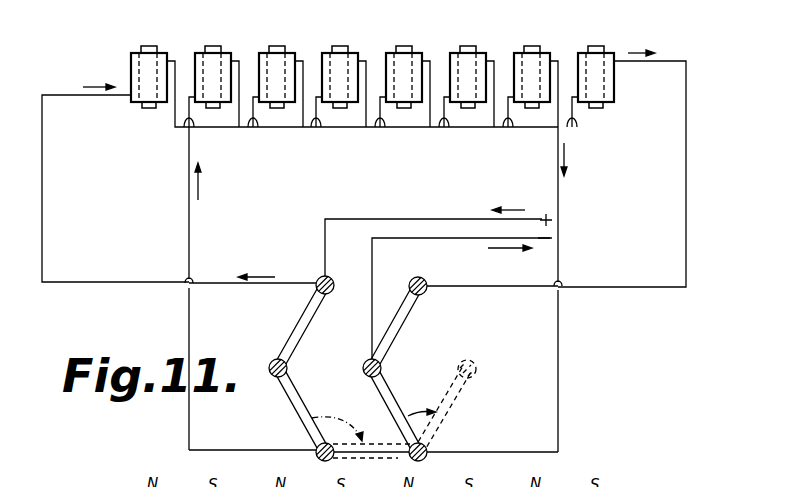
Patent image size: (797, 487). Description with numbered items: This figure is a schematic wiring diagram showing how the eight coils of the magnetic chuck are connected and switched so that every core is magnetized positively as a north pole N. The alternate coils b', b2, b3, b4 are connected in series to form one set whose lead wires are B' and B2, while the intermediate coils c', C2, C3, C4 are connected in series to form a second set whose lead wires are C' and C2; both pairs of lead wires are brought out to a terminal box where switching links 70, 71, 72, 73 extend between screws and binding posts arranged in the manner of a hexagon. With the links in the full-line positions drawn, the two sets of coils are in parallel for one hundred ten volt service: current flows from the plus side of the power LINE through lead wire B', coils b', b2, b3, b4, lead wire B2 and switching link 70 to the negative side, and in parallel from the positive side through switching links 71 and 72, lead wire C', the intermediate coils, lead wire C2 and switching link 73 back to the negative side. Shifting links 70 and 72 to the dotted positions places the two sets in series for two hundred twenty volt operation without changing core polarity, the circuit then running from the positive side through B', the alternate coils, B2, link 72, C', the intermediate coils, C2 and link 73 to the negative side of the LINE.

The north pole N is at (372, 69).
The coil b2 is at (259, 57).
The coil b3 is at (386, 57).
The coil b4 is at (514, 57).
The lead wire C2 is at (686, 190).
The coil C3 is at (450, 57).
The coil C4 is at (578, 57).
The lead wire B2 is at (559, 257).
The power line LINE is at (438, 283).
The switching link 70 is at (395, 393).
The switching link 71 is at (297, 327).
The switching link 72 is at (292, 408).
The switching link 73 is at (405, 317).